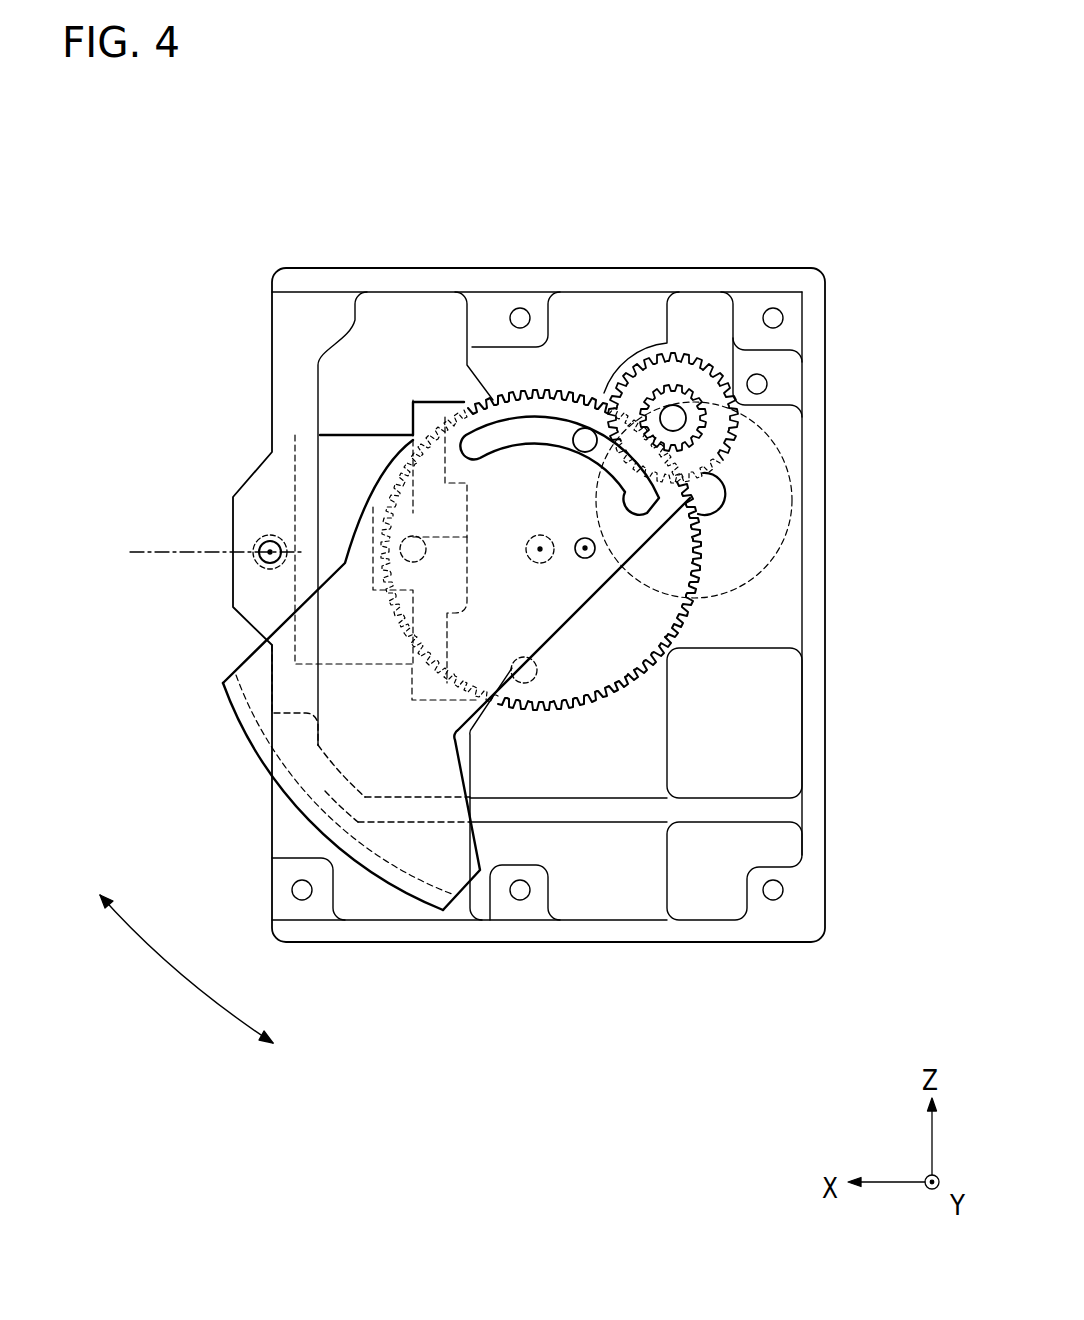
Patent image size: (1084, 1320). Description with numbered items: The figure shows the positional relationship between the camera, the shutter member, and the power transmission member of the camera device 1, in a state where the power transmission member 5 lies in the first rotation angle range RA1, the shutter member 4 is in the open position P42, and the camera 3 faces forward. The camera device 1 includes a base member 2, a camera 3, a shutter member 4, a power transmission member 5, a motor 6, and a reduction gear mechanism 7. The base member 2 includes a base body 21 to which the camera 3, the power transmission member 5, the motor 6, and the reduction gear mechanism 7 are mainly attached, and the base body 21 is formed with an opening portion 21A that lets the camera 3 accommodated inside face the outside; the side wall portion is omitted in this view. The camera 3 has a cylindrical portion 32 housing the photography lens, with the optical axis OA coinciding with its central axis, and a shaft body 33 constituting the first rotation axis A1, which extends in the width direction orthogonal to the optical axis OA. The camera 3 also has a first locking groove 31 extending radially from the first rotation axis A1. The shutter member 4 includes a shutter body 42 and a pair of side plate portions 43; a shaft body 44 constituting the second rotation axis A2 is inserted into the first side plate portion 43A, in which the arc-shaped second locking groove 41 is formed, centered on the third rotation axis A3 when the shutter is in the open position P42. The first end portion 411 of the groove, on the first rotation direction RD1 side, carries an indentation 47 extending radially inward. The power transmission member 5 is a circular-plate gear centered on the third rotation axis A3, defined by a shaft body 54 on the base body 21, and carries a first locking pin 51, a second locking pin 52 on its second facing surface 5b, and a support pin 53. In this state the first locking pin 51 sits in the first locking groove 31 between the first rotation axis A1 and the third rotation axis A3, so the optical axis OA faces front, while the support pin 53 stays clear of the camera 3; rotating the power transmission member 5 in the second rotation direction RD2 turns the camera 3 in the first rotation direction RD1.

The camera device 1 is at (861, 173).
The base member 2 is at (821, 945).
The base body 21 is at (776, 267).
The opening portion 21A is at (317, 370).
The camera 3 is at (326, 479).
The first locking groove 31 is at (442, 557).
The cylindrical portion 32 is at (353, 433).
The shaft body 33 is at (267, 567).
The shutter member 4 is at (552, 763).
The second locking groove 41 is at (679, 364).
The first end portion 411 is at (652, 512).
The shutter body 42 is at (283, 778).
The side plate portions 43 is at (407, 842).
The first side plate portion 43A is at (333, 865).
The shaft body 44 is at (587, 558).
The indentation 47 is at (702, 542).
The power transmission member 5 is at (650, 496).
The second facing surface 5b is at (660, 603).
The first locking pin 51 is at (411, 535).
The second locking pin 52 is at (586, 428).
The support pin 53 is at (524, 684).
The shaft body 54 is at (538, 535).
The motor 6 is at (792, 428).
The reduction gear mechanism 7 is at (683, 353).
The first rotation axis A1 is at (262, 542).
The second rotation axis A2 is at (592, 549).
The third rotation axis A3 is at (540, 563).
The optical axis OA is at (160, 553).
The open position P42 is at (552, 763).
The first rotation angle range RA1 is at (650, 496).
The first rotation direction RD1 is at (162, 993).
The second rotation direction RD2 is at (190, 993).